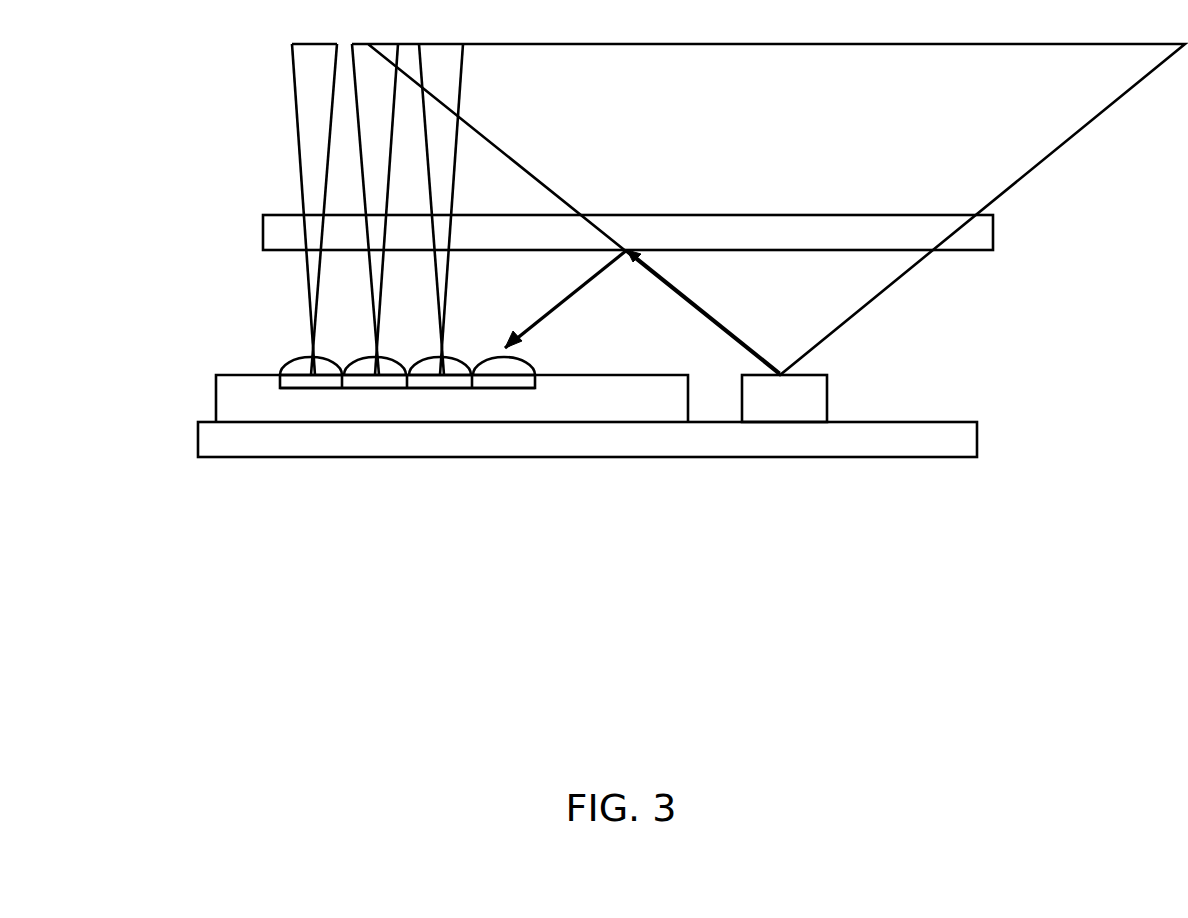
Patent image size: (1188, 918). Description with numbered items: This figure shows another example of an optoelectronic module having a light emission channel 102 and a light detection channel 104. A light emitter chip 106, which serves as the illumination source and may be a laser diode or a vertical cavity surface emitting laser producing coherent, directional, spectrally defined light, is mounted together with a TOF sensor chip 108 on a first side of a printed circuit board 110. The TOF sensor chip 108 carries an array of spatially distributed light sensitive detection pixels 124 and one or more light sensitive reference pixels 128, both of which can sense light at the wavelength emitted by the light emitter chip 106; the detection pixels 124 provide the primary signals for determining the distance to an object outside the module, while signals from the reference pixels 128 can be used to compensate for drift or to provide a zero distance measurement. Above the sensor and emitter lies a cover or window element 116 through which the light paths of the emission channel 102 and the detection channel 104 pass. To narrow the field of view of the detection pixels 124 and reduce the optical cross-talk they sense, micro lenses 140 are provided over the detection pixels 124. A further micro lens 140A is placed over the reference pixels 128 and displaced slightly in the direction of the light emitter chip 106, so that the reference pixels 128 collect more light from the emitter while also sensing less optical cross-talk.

The light emission channel 102 is at (797, 315).
The light detection channel 104 is at (323, 325).
The light emitter chip 106 is at (803, 399).
The TOF sensor chip 108 is at (263, 400).
The printed circuit board 110 is at (820, 447).
The transparent cover plate 116 is at (262, 232).
The detection pixels 124 is at (372, 382).
The reference pixels 128 is at (495, 382).
The micro lenses 140 is at (302, 367).
The micro lens 140A is at (522, 366).